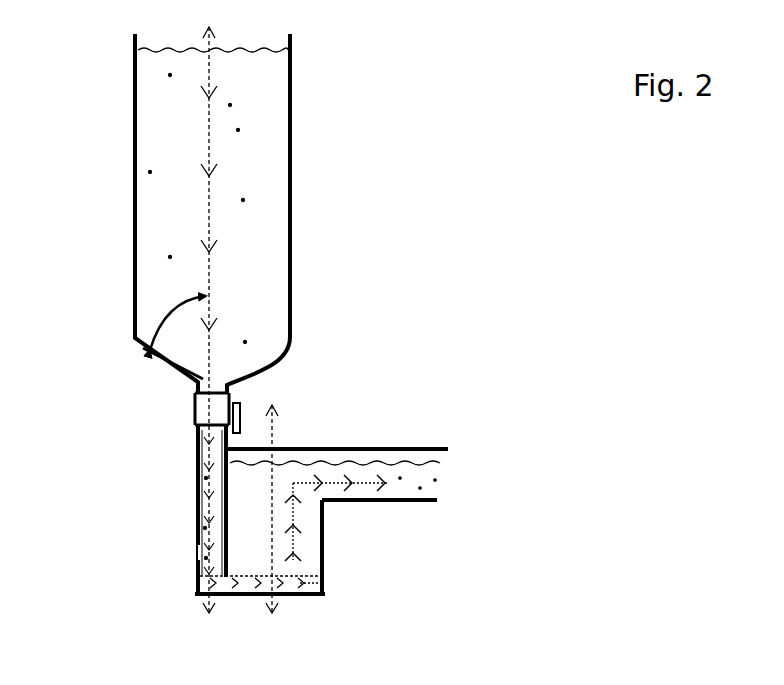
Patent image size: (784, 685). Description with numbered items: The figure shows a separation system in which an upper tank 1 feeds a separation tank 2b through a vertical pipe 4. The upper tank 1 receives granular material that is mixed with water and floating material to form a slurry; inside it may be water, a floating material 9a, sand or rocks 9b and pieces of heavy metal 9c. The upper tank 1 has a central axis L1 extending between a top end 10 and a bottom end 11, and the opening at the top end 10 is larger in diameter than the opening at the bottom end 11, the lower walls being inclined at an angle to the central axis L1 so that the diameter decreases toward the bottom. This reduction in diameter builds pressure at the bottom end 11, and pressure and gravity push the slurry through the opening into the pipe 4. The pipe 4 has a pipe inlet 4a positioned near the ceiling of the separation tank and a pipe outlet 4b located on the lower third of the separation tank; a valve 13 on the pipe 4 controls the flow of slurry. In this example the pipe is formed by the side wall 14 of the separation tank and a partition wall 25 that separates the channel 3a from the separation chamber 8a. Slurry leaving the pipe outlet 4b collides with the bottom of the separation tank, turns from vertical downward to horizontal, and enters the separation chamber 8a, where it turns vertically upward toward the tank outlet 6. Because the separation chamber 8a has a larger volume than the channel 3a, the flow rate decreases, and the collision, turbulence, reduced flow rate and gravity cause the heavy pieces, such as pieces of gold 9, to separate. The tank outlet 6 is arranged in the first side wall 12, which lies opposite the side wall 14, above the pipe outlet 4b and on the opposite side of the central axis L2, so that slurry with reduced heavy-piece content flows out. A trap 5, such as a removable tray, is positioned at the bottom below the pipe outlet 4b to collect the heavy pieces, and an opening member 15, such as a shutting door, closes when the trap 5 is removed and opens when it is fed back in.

The upper tank 1 is at (131, 193).
The top end 10 is at (222, 40).
The floating material 9a is at (272, 138).
The sand or rocks 9b is at (240, 202).
The pieces of heavy metal 9c is at (263, 247).
The bottom end 11 is at (143, 346).
The valve 13 is at (200, 398).
The pipe 4 is at (198, 457).
The pipe inlet 4a is at (205, 437).
The channel 3a is at (200, 500).
The side wall 14 is at (205, 522).
The separation tank 2b is at (188, 552).
The pipe outlet 4b is at (197, 585).
The tank outlet 6 is at (437, 477).
The first side wall 12 is at (323, 517).
The opening member 15 is at (308, 548).
The trap 5 is at (278, 592).
The pieces of gold 9 is at (322, 583).
The separation chamber 8a is at (266, 548).
The partition wall 25 is at (228, 512).
The central axis L1 is at (205, 341).
The central axis L2 is at (273, 490).